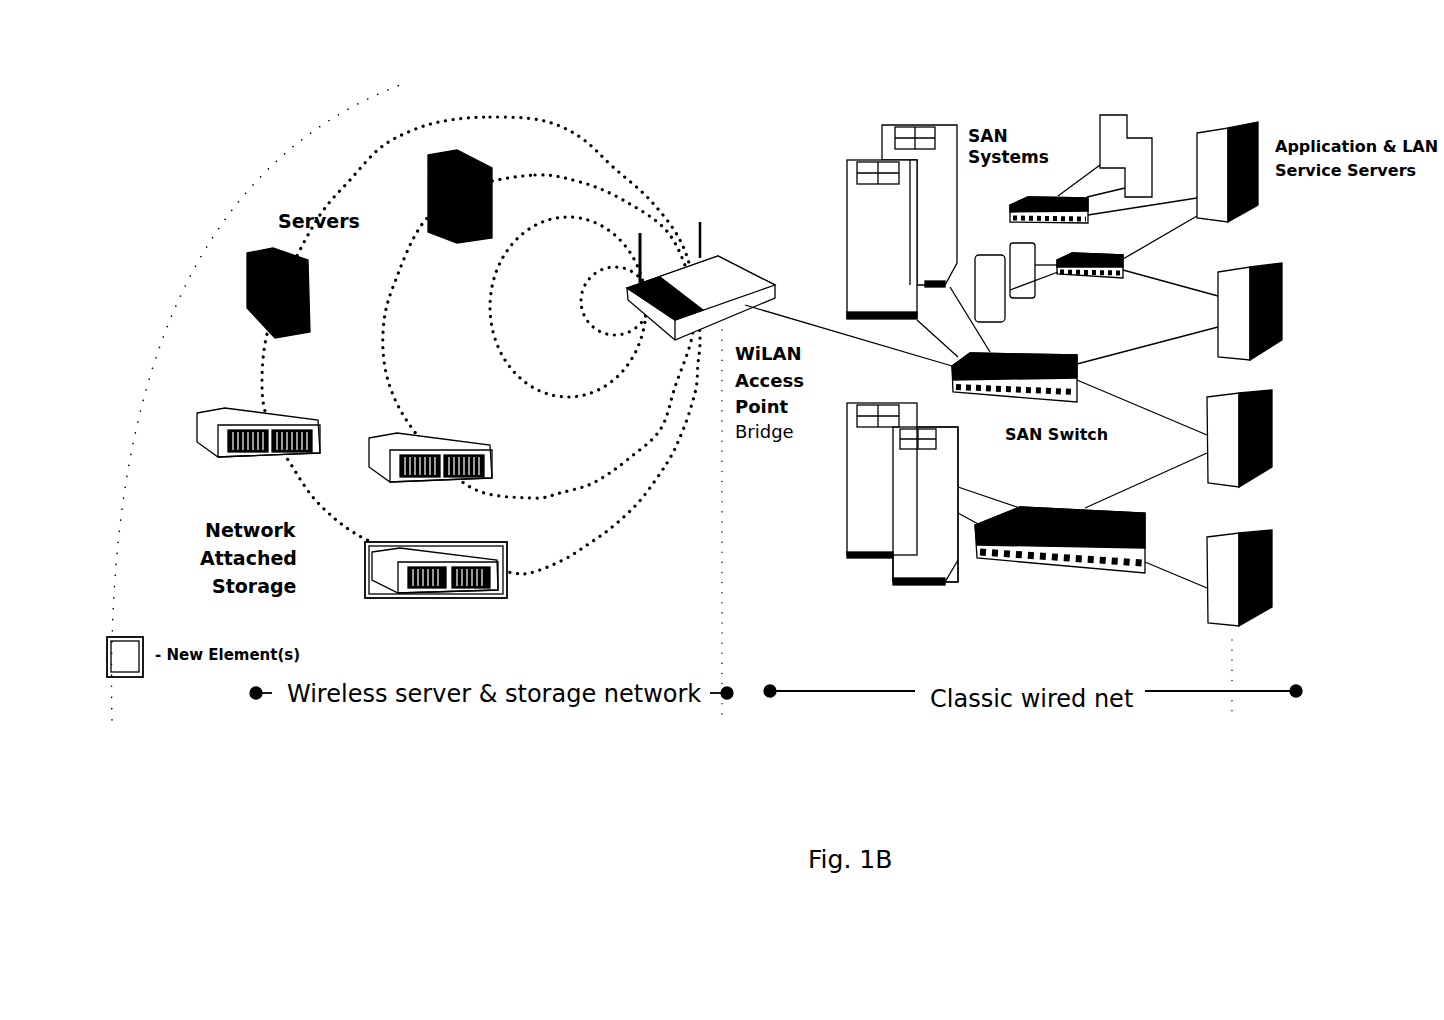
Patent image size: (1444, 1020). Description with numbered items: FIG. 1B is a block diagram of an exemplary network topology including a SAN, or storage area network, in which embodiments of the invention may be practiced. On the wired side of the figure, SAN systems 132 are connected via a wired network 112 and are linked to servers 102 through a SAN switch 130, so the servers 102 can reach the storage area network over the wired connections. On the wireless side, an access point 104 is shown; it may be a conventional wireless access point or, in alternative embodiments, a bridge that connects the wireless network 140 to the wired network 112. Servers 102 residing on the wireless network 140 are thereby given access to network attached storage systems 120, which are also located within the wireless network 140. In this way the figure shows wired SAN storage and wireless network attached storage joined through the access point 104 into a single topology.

The servers 102 is at (428, 183).
The access point 104 is at (743, 266).
The wired network 112 is at (848, 335).
The network attached storage systems 120 is at (296, 415).
The SAN switch 130 is at (977, 393).
The SAN systems 132 is at (930, 125).
The wireless network 140 is at (597, 547).